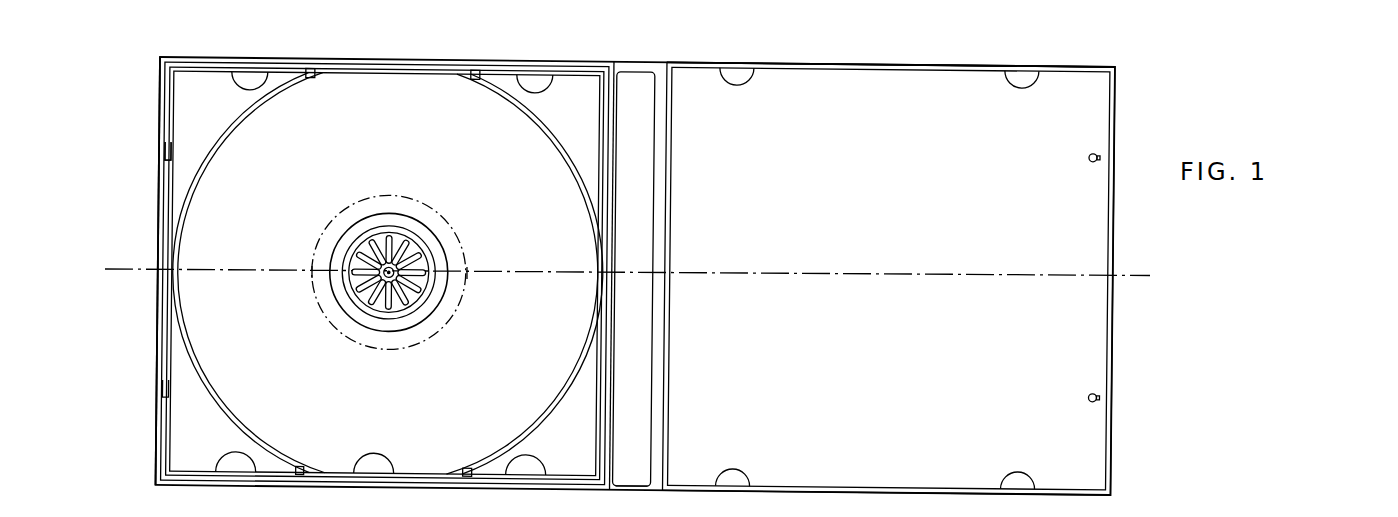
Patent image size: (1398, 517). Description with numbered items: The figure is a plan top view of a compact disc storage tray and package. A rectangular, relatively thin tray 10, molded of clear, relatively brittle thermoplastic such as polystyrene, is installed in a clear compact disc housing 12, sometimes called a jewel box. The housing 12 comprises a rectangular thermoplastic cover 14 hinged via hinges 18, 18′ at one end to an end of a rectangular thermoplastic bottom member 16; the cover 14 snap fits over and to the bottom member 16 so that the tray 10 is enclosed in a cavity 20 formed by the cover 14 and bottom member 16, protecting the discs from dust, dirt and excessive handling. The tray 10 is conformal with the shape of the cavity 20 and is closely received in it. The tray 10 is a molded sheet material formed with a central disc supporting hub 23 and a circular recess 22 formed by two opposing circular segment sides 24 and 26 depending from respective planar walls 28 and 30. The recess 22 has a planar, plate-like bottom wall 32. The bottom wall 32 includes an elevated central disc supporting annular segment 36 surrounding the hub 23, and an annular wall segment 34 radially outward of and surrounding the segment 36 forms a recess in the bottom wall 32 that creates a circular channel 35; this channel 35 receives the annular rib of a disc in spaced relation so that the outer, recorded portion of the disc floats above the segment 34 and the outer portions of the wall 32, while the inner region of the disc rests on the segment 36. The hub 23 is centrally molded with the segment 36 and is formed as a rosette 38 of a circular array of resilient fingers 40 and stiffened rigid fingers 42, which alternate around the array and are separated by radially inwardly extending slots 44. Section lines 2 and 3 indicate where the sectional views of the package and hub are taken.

The section line 2- 2 is at (124, 266).
The section line 3 is at (462, 222).
The tray 10 is at (250, 363).
The compact disc housing 12 is at (735, 505).
The cover 14 is at (975, 66).
The bottom member 16 is at (482, 483).
The hinge 18 is at (637, 43).
The hinge 18′ is at (641, 501).
The cavity 20 is at (377, 470).
The circular recess 22 is at (252, 432).
The central disc supporting hub 23 is at (344, 214).
The circular segment side 24 is at (552, 405).
The circular segment side 26 is at (183, 262).
The planar wall 28 is at (578, 455).
The planar wall 30 is at (197, 452).
The bottom wall 32 is at (460, 425).
The annular wall segment 34 is at (445, 290).
The circular channel 35 is at (360, 308).
The elevated central disc supporting annular segment 36 is at (390, 232).
The rosette 38 is at (418, 263).
The resilient finger 40 is at (360, 264).
The stiffened rigid finger 42 is at (430, 313).
The slot 44 is at (378, 300).